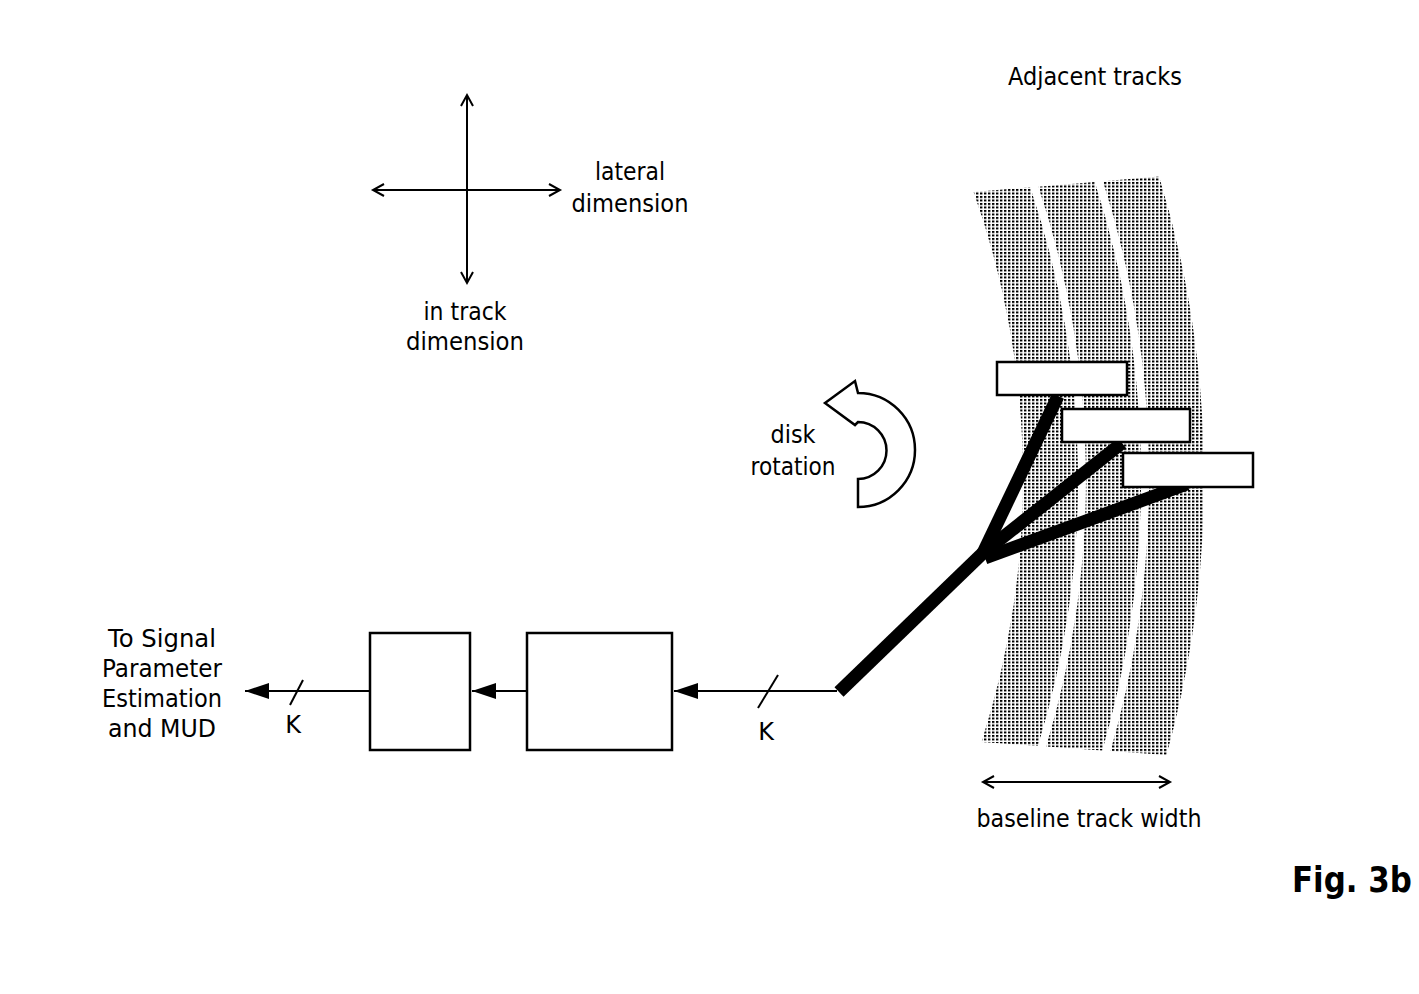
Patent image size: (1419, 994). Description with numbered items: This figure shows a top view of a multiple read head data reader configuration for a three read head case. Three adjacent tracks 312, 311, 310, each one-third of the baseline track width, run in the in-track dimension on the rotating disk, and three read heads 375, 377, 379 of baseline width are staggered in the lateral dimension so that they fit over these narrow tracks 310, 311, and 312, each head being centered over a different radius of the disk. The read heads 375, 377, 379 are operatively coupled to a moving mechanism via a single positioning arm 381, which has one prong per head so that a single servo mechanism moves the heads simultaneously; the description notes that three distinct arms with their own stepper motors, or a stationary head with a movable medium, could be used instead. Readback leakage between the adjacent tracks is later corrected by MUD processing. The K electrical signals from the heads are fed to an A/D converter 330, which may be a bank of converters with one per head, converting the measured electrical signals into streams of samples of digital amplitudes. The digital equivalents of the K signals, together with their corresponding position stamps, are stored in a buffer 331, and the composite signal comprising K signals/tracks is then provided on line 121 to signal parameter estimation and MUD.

The track 310 is at (1132, 172).
The track 311 is at (1075, 172).
The track 312 is at (1018, 172).
The read head 375 is at (1046, 377).
The read head 377 is at (1152, 423).
The read head 379 is at (1225, 470).
The positioning arm 381 is at (873, 645).
The A/D converter 330 is at (599, 691).
The buffer 331 is at (420, 691).
The line 121 is at (307, 684).